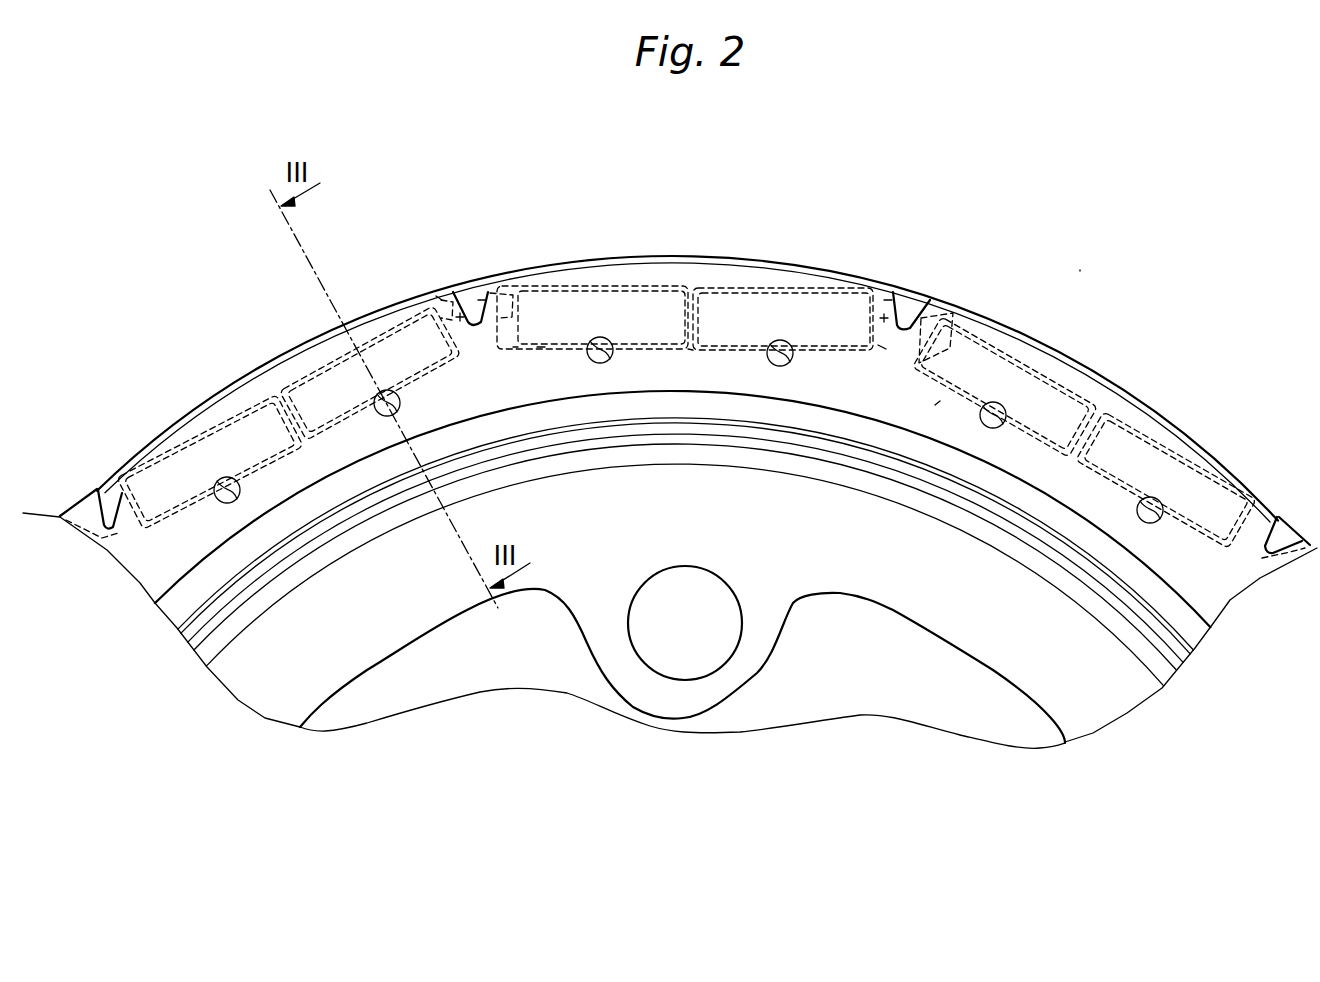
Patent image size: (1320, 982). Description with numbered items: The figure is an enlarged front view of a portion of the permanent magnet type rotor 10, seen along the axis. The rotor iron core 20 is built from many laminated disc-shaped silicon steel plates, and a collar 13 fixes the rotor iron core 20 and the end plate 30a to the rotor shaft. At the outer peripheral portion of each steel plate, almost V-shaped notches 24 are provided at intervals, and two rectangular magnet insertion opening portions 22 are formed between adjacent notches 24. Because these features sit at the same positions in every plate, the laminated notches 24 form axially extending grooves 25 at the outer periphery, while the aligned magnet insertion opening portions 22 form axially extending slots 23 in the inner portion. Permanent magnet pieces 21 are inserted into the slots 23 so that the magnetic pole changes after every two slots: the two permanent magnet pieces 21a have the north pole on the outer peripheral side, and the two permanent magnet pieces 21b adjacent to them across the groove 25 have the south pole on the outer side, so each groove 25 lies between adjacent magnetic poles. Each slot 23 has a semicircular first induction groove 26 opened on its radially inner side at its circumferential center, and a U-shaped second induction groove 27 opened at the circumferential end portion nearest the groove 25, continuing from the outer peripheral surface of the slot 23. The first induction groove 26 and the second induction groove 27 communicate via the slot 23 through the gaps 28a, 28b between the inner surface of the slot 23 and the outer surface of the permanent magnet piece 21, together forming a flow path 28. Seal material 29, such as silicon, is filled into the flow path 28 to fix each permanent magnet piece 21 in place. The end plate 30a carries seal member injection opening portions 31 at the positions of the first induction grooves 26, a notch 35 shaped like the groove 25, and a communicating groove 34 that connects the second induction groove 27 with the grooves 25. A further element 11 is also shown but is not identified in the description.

The permanent magnet type rotor 10 is at (1061, 298).
The rotor core 11 is at (973, 717).
The collar 13 is at (298, 507).
The rotor iron core 20 is at (356, 322).
The permanent magnet pieces 21 is at (658, 307).
The permanent magnet pieces 21a is at (685, 278).
The permanent magnet pieces 21b is at (257, 423).
The magnet insertion opening portions 22 is at (694, 318).
The slots 23 is at (558, 300).
The notches 24 is at (697, 328).
The grooves 25 is at (485, 318).
The first induction groove 26 is at (608, 362).
The second induction groove 27 is at (483, 293).
The flow path 28 is at (825, 356).
The gap 28a is at (537, 357).
The gap 28b is at (538, 348).
The seal material 29 is at (1193, 540).
The end plate 30a is at (937, 403).
The seal member injection opening portions 31 is at (772, 364).
The communicating groove 34 is at (438, 293).
The notch 35 is at (691, 310).